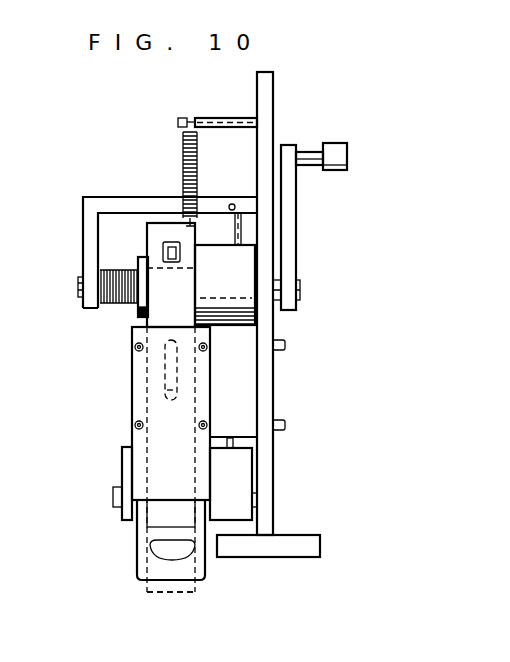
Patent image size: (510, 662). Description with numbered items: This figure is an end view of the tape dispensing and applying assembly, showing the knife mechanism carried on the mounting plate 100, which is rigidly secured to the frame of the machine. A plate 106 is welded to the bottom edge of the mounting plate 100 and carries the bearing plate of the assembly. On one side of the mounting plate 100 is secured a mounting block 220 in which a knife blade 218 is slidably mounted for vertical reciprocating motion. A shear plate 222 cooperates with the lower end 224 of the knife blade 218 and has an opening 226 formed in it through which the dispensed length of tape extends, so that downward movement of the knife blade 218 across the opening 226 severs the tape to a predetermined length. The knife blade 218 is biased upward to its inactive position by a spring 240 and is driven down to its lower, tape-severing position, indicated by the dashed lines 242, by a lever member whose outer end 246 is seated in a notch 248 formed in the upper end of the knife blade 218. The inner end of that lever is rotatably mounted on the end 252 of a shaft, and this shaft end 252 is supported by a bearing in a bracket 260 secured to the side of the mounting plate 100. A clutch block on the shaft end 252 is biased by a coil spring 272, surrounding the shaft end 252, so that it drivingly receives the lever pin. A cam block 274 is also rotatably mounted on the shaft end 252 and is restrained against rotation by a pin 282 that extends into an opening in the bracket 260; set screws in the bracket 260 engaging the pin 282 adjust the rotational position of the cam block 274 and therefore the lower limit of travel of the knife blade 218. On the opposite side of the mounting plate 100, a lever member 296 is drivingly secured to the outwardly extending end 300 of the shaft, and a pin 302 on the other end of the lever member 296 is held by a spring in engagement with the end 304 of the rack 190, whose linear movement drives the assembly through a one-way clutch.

The mounting plate 100 is at (273, 82).
The plate 106 is at (300, 542).
The rack 190 is at (333, 145).
The knife blade 218 is at (167, 317).
The mounting block 220 is at (133, 403).
The shear plate 222 is at (137, 543).
The lower end of knife blade 224 is at (162, 512).
The opening 226 is at (235, 480).
The spring 240 is at (217, 172).
The dashed lines 242 is at (180, 593).
The outer end of lever member 246 is at (175, 243).
The notch 248 is at (163, 245).
The end of shaft 252 is at (80, 283).
The bracket 260 is at (128, 205).
The coil spring 272 is at (117, 303).
The cam block 274 is at (205, 285).
The pin 282 is at (233, 232).
The lever member 296 is at (296, 240).
The end of shaft 300 is at (300, 291).
The pin 302 is at (307, 152).
The end of rack 304 is at (347, 166).